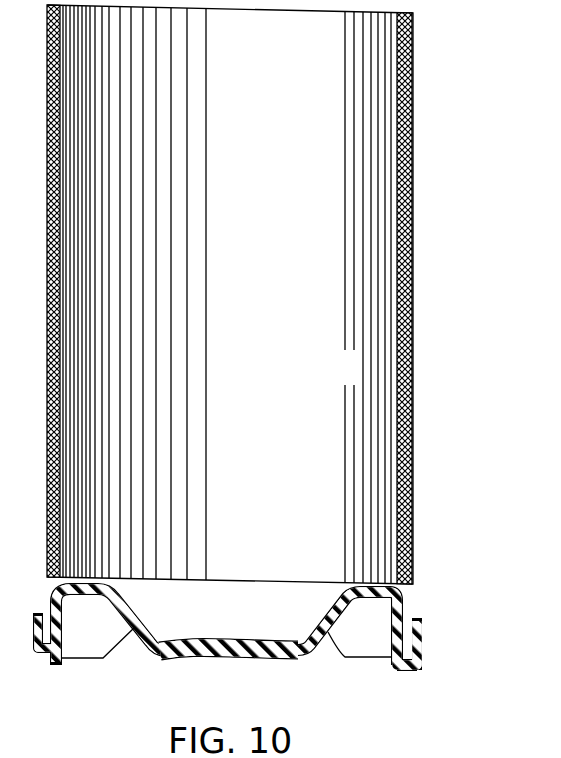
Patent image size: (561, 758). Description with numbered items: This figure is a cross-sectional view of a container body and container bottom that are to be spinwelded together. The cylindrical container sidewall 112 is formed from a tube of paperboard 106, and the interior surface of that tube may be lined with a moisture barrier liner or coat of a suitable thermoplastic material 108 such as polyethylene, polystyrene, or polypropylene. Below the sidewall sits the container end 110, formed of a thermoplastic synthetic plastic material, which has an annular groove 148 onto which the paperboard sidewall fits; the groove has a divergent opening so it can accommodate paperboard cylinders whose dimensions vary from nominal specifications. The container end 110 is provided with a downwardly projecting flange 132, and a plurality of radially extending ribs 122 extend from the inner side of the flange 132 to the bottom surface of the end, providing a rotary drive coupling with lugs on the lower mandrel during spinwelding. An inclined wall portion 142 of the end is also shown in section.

The paperboard 106 is at (413, 380).
The thermoplastic material liner 108 is at (400, 377).
The container end 110 is at (198, 653).
The container sidewall 112 is at (419, 190).
The radially extending ribs 122 is at (375, 652).
The downwardly projecting flange 132 is at (407, 667).
The inclined panel wall 142 is at (312, 637).
The annular groove 148 is at (422, 623).